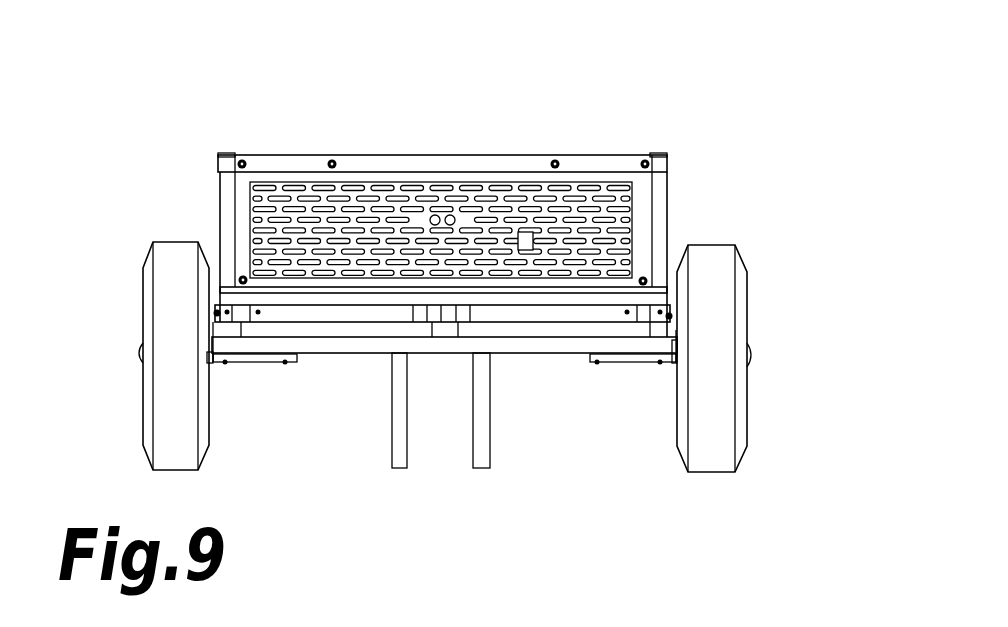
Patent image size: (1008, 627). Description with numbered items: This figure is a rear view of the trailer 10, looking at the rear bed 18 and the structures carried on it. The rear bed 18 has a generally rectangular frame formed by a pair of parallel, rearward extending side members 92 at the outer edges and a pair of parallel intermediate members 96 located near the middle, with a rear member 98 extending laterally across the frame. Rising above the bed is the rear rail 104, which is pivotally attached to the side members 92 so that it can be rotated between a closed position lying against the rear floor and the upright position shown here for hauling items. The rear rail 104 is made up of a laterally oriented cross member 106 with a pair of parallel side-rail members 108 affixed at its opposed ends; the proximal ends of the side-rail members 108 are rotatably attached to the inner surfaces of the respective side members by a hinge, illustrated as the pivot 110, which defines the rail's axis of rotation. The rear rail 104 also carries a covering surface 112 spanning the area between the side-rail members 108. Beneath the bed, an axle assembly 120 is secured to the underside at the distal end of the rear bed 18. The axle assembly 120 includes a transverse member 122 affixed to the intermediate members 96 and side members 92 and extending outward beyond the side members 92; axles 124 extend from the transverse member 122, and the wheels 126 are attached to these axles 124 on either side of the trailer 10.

The trailer 10 is at (753, 123).
The rear bed 18 is at (303, 302).
The side members 92 is at (242, 323).
The intermediate members 96 is at (458, 337).
The rear member 98 is at (368, 298).
The rear rail 104 is at (545, 157).
The cross member 106 is at (283, 160).
The side-rail members 108 is at (218, 185).
The pivot 110 is at (217, 312).
The covering surface 112 is at (362, 228).
The axle assembly 120 is at (563, 358).
The transverse member 122 is at (528, 340).
The axles 124 is at (243, 355).
The wheels 126 is at (148, 432).